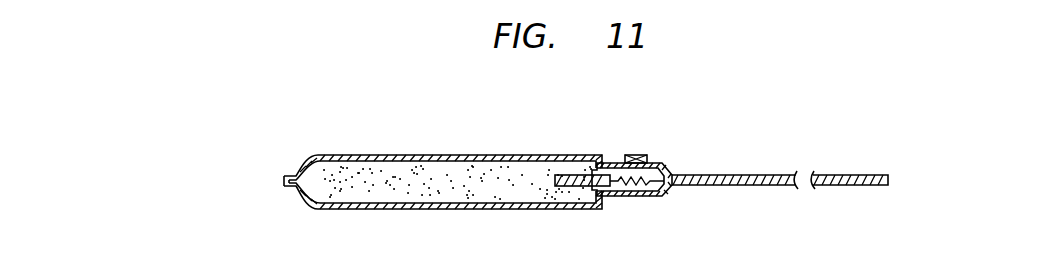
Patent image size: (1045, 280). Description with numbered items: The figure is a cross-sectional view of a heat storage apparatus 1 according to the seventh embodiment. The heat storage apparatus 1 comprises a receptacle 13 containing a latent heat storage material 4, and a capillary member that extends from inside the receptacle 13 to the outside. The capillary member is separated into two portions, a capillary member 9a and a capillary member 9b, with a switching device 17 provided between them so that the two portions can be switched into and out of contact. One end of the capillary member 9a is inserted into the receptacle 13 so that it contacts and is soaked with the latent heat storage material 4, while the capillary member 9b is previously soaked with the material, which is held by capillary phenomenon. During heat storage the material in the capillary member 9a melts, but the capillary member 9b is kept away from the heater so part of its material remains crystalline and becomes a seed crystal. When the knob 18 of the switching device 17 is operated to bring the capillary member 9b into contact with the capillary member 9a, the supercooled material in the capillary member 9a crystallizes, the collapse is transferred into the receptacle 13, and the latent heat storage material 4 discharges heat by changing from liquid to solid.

The heat storage apparatus 1 is at (443, 175).
The receptacle 13 is at (489, 157).
The latent heat storage material 4 is at (461, 194).
The capillary member 9a is at (577, 170).
The capillary member 9b is at (748, 186).
The switching device 17 is at (631, 197).
The knob 18 is at (646, 156).